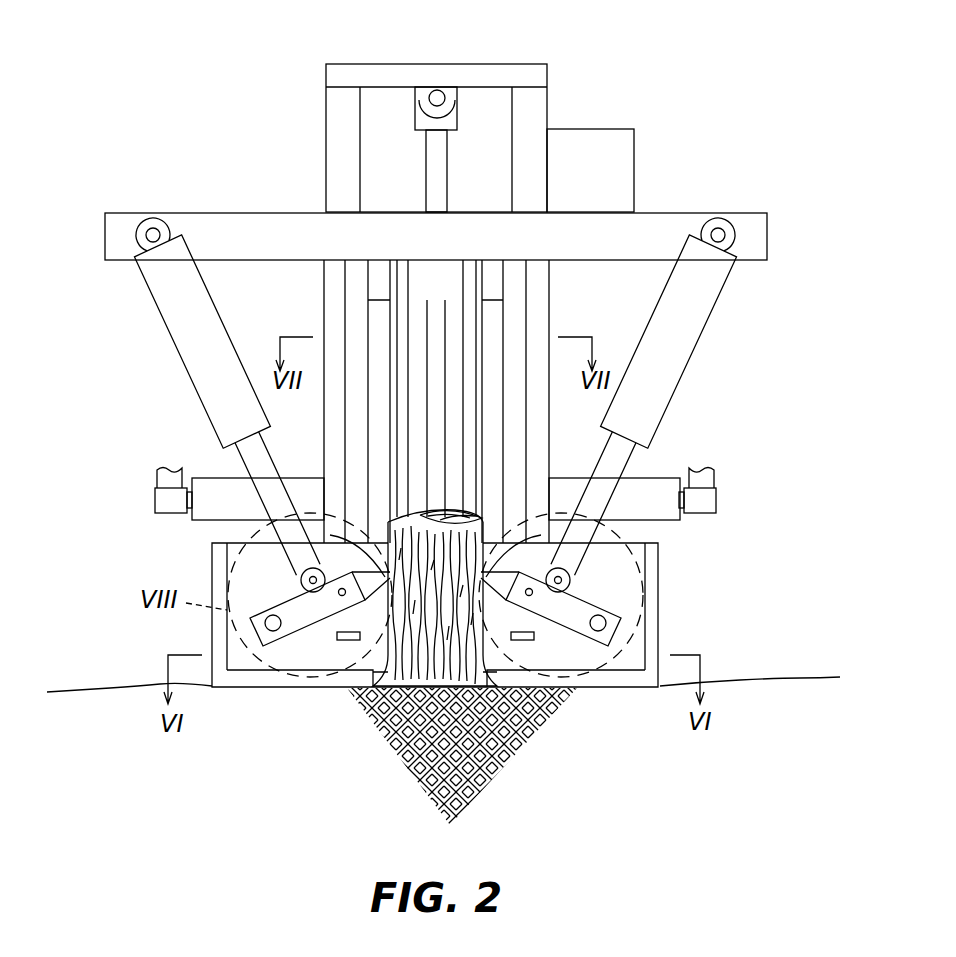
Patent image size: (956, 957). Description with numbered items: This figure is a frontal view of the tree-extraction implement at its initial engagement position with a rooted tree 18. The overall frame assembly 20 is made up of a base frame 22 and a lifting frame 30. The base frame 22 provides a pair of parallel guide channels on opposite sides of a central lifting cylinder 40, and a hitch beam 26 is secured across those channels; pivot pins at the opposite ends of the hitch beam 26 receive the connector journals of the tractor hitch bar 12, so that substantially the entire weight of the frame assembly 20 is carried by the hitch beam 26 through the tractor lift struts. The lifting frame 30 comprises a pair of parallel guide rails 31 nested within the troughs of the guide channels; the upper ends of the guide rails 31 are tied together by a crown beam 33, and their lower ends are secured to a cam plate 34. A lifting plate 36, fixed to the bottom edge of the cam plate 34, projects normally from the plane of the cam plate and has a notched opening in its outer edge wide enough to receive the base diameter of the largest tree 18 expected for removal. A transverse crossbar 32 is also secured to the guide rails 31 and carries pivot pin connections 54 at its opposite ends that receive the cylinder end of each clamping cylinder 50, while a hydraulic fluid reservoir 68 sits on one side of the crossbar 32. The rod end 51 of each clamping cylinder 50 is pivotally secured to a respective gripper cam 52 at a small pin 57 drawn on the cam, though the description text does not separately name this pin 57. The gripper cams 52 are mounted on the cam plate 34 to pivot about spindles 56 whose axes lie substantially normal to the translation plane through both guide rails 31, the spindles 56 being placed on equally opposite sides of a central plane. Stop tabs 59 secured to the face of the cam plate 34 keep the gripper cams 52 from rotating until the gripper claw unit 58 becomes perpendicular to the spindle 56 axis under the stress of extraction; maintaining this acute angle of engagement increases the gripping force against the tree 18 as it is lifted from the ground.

The hitch bar 12 is at (157, 478).
The tree 18 is at (448, 607).
The frame assembly 20 is at (318, 157).
The base frame 22 is at (513, 300).
The hitch beam 26 is at (664, 509).
The lifting frame 30 is at (545, 112).
The guide rails 31 is at (348, 174).
The crossbar 32 is at (658, 224).
The crown beam 33 is at (457, 76).
The cam plate 34 is at (626, 580).
The lifting plate 36 is at (618, 672).
The lifting cylinder 40 is at (449, 295).
The clamping cylinder 50 is at (199, 322).
The rod end 51 is at (278, 460).
The gripper cams 52 is at (324, 615).
The pivot pin connections 54 is at (142, 236).
The spindles 56 is at (265, 627).
The pin 57 is at (338, 591).
The gripper claw unit 58 is at (327, 537).
The stop tabs 59 is at (355, 641).
The hydraulic fluid reservoir 68 is at (601, 172).